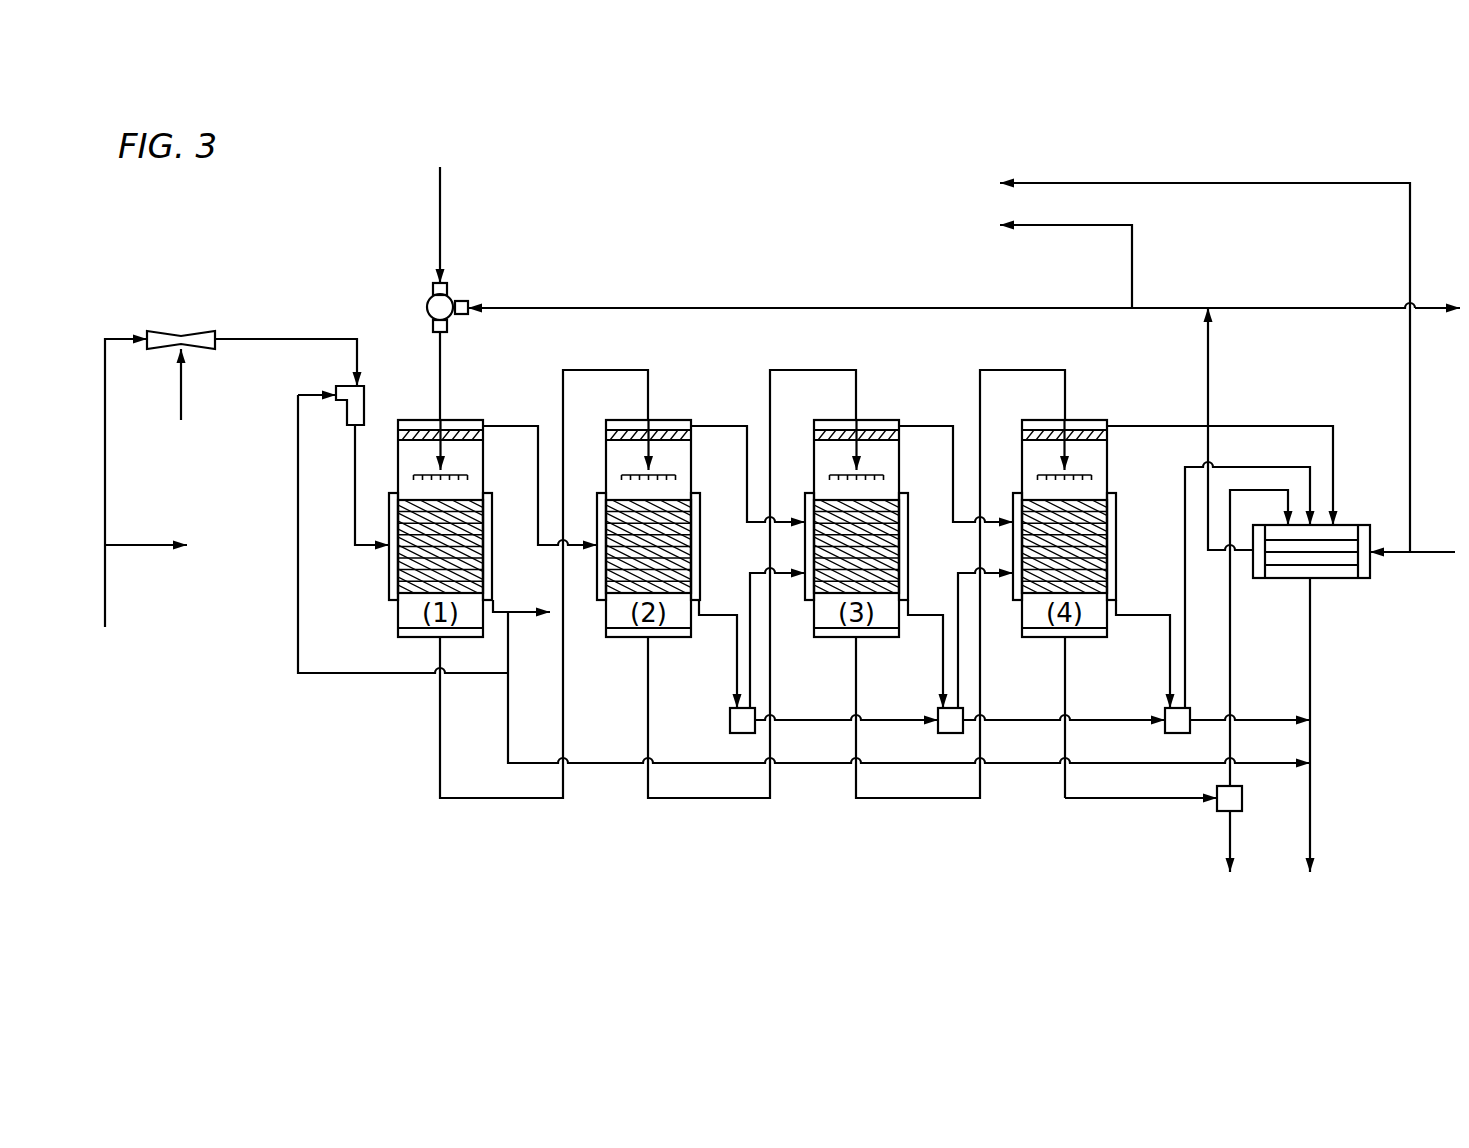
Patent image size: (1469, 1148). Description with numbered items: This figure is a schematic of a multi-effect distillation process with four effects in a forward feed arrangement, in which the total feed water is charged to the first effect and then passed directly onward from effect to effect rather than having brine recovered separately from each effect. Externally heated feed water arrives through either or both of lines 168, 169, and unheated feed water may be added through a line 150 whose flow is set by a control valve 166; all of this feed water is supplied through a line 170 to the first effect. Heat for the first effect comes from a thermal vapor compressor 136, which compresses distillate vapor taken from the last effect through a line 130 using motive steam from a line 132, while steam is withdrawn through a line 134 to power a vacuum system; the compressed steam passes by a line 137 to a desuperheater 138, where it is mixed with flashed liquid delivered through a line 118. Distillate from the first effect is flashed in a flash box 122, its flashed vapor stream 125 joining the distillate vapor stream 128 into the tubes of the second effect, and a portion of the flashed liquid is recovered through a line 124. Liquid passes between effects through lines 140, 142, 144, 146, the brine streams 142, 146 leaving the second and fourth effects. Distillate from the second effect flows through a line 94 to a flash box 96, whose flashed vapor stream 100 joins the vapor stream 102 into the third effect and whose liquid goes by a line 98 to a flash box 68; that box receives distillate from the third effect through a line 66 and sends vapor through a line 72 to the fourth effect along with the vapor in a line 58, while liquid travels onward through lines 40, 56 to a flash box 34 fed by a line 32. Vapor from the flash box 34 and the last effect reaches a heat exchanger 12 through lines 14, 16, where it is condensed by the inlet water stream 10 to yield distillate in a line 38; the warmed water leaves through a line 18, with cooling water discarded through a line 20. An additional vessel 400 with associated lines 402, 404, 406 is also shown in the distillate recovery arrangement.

The inlet water stream 10 is at (1428, 552).
The heat exchanger 12 is at (1328, 592).
The line 14 is at (1181, 426).
The line 16 is at (1184, 583).
The line 18 is at (1209, 382).
The line 20 is at (1423, 308).
The line 32 is at (1153, 618).
The flash box 34 is at (1168, 728).
The line 38 is at (1313, 702).
The line 40 is at (1092, 720).
The line 56 is at (1210, 716).
The line 58 is at (950, 424).
The line 66 is at (925, 618).
The flash box 68 is at (946, 728).
The line 72 is at (955, 588).
The line 94 is at (718, 617).
The flash box 96 is at (737, 728).
The line 98 is at (946, 718).
The flashed vapor stream 100 is at (749, 583).
The vapor stream 102 is at (745, 424).
The line 118 is at (355, 523).
The flash box 122 is at (507, 698).
The line 124 is at (378, 674).
The flashed vapor stream 125 is at (527, 611).
The distillate vapor stream 128 is at (536, 424).
The line 130 is at (181, 378).
The line 132 is at (108, 580).
The line 134 is at (130, 543).
The thermal vapor compressor 136 is at (179, 331).
The line 137 is at (322, 338).
The desuperheater 138 is at (366, 395).
The reactor bottoms line 140 is at (440, 737).
The brine stream 142 is at (649, 672).
The reactor bottoms line 144 is at (854, 662).
The brine stream 146 is at (1063, 738).
The line 150 is at (843, 309).
The control valve 166 is at (426, 308).
The line 168 is at (1133, 272).
The line 169 is at (1232, 184).
The line 170 is at (441, 224).
The separator 400 is at (1222, 808).
The outlet line 402 is at (1233, 826).
The transfer line 404 is at (1120, 800).
The recycle line 406 is at (1237, 655).